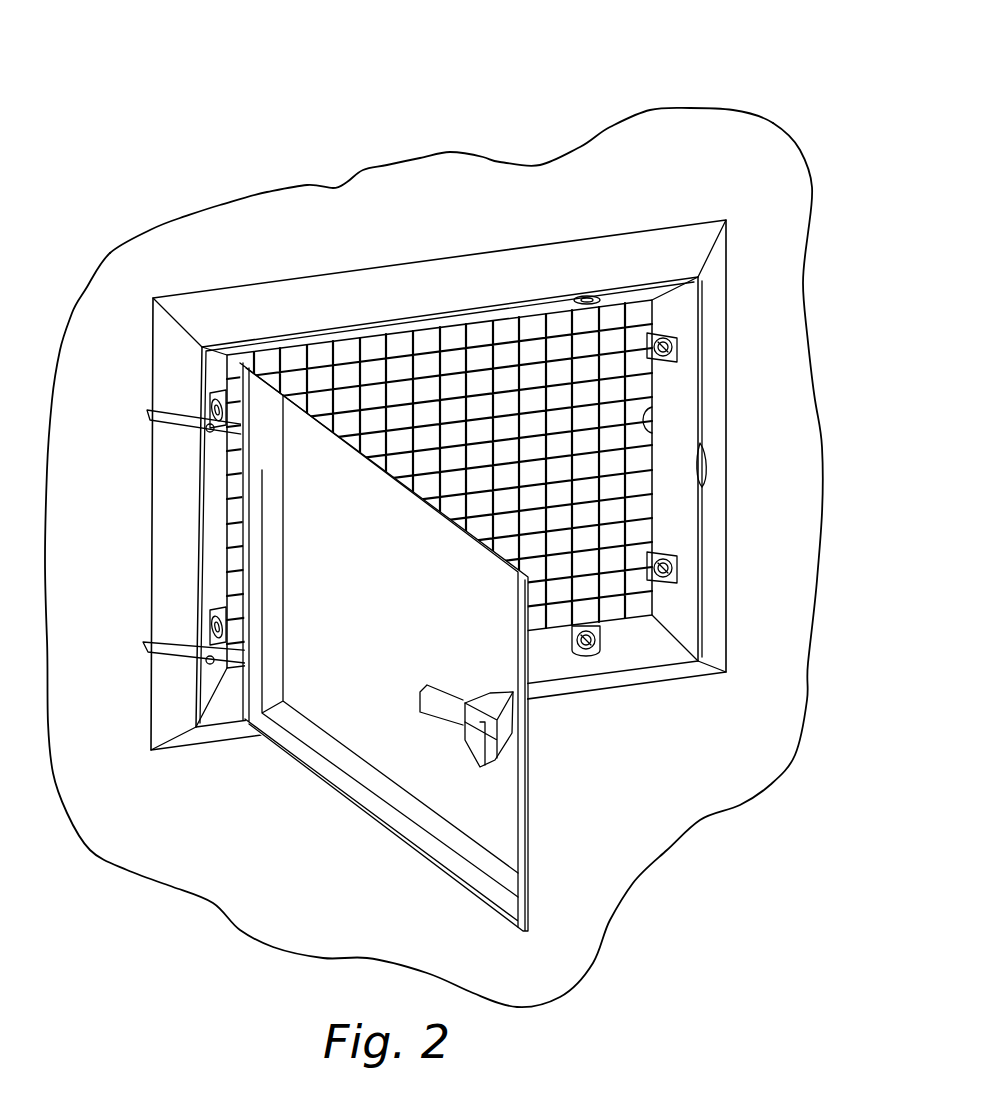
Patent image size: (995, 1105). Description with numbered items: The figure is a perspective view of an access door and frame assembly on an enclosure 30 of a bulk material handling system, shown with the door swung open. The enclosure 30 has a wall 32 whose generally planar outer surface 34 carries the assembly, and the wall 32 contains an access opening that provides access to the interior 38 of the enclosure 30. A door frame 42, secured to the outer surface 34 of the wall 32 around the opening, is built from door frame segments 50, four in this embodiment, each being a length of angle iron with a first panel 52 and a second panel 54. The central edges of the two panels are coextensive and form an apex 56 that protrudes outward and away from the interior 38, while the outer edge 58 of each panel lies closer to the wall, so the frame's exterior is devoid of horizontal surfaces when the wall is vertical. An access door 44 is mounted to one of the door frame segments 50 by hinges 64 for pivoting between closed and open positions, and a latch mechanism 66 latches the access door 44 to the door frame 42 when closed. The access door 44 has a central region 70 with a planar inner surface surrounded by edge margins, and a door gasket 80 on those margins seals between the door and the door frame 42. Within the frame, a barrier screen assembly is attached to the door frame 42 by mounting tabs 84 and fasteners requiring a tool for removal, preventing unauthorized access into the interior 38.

The enclosure 30 is at (313, 183).
The wall 32 is at (447, 152).
The outer surface 34 is at (643, 157).
The interior 38 is at (501, 372).
The door frame 42 is at (265, 290).
The access door 44 is at (385, 747).
The door frame segment 50 is at (580, 258).
The first panel 52 is at (372, 326).
The second panel 54 is at (222, 313).
The apex 56 is at (700, 320).
The outer edge 58 is at (653, 432).
The hinges 64 is at (160, 435).
The latch mechanism 66 is at (482, 690).
The central region 70 is at (330, 700).
The door gasket 80 is at (412, 848).
The mounting tabs 84 is at (670, 583).